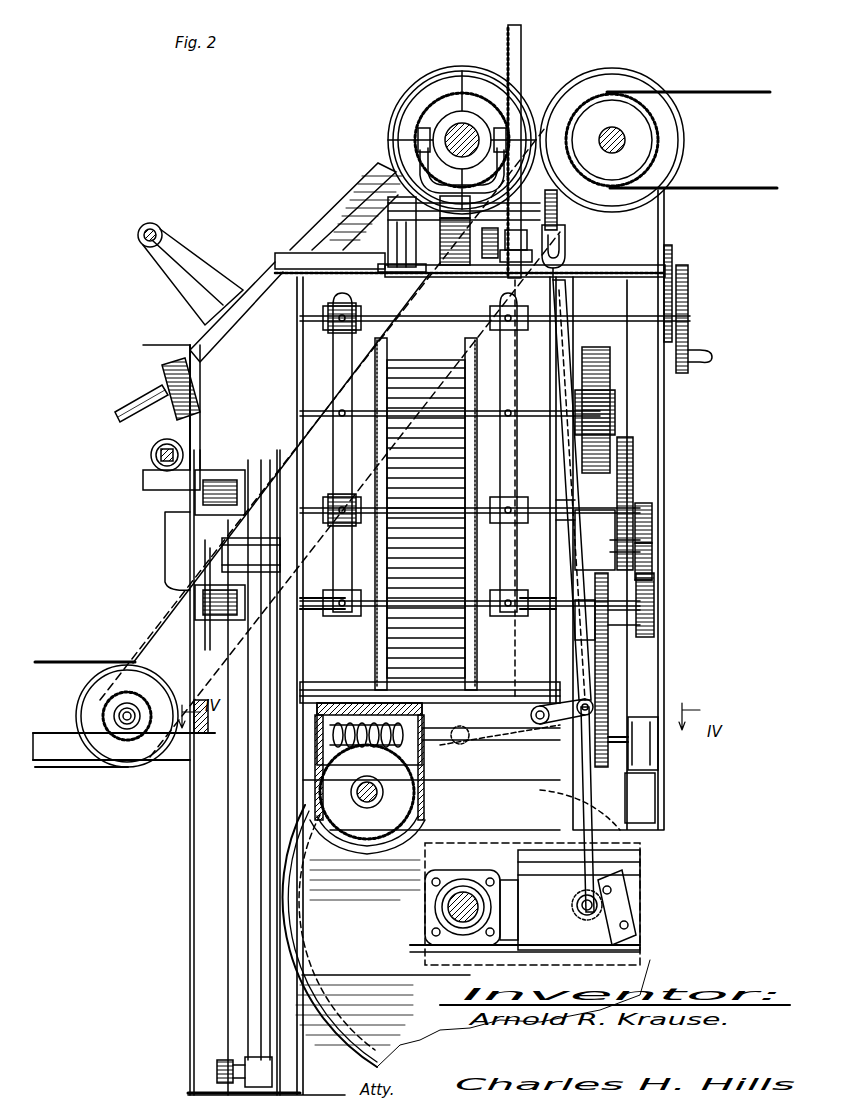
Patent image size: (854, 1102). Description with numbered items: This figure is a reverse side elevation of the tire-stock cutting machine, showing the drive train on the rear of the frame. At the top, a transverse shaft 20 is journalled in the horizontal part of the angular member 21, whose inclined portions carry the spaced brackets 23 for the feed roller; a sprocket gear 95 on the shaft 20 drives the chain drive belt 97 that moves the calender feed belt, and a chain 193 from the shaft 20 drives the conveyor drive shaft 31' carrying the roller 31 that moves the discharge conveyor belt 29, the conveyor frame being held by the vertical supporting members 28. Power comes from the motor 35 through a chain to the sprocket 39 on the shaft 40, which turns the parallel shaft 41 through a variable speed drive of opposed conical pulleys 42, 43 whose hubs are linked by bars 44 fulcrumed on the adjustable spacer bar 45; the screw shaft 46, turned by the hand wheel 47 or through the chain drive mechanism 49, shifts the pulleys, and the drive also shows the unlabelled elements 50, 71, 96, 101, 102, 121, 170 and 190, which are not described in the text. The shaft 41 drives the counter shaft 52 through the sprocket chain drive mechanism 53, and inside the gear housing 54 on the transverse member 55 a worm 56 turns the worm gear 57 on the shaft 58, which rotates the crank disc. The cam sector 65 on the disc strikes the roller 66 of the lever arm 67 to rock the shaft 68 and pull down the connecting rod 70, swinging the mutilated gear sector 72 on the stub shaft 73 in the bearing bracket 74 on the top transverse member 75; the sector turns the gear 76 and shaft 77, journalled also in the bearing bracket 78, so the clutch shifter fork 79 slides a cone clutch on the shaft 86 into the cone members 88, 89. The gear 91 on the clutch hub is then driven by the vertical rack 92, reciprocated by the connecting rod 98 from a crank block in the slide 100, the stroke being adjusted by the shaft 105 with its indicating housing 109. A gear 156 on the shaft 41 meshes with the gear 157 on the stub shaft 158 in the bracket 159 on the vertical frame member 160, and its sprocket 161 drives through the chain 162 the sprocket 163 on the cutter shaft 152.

The transverse shaft 20 is at (625, 142).
The angular member 21 is at (305, 240).
The spaced brackets 23 is at (205, 265).
The vertical supporting members 28 is at (195, 808).
The conveyor belt 29 is at (48, 663).
The roller 31 is at (120, 736).
The drive shaft 31' is at (95, 716).
The motor 35 is at (560, 348).
The sprocket 39 is at (605, 392).
The shaft 40 is at (312, 410).
The parallel shaft 41 is at (312, 598).
The opposed conical pulleys 42 is at (383, 360).
The opposed conical pulleys 43 is at (378, 648).
The bar 44 is at (350, 522).
The adjustable spacer bar 45 is at (326, 506).
The right and left-hand screw shaft 46 is at (325, 312).
The hand wheel 47 is at (690, 350).
The chain drive mechanism 49 is at (670, 265).
The drum 50 is at (438, 362).
The counter shaft 52 is at (640, 760).
The sprocket chain drive mechanism 53 is at (605, 685).
The gear housing 54 is at (422, 815).
The transverse member 55 is at (335, 690).
The worm 56 is at (420, 745).
The worm gear 57 is at (405, 780).
The shaft 58 is at (395, 796).
The cam sector 65 is at (632, 905).
The roller 66 is at (470, 745).
The lever arm 67 is at (530, 717).
The shaft 68 is at (555, 695).
The connecting rod 70 is at (600, 660).
The collar 71 is at (496, 238).
The mutilated gear sector 72 is at (560, 232).
The stub shaft 73 is at (505, 243).
The bearing bracket 74 is at (505, 272).
The top transverse member 75 is at (570, 262).
The gear 76 is at (552, 196).
The shaft 77 is at (448, 222).
The bearing bracket 78 is at (392, 240).
The clutch shifter fork 79 is at (430, 156).
The shaft 86 is at (440, 128).
The cone member 88 is at (415, 108).
The cone member 89 is at (410, 118).
The gear 91 is at (440, 82).
The vertical rack 92 is at (522, 45).
The sprocket gear 95 is at (620, 128).
The rod 96 is at (567, 580).
The chain drive belt 97 is at (708, 92).
The connecting rod 98 is at (618, 815).
The slide 100 is at (172, 372).
The shaft 101 is at (122, 410).
The shaft 102 is at (658, 148).
The shaft 105 is at (200, 400).
The housing 109 is at (155, 473).
The housing 121 is at (400, 875).
The shaft 152 is at (247, 470).
The gear 156 is at (652, 605).
The gear 157 is at (648, 530).
The stub shaft 158 is at (650, 550).
The bracket 159 is at (597, 535).
The vertical frame member 160 is at (560, 508).
The sprocket 161 is at (630, 520).
The chain 162 is at (633, 490).
The sprocket 163 is at (630, 442).
The curved guard 170 is at (420, 925).
The bracket 190 is at (188, 775).
The chain 193 is at (165, 637).